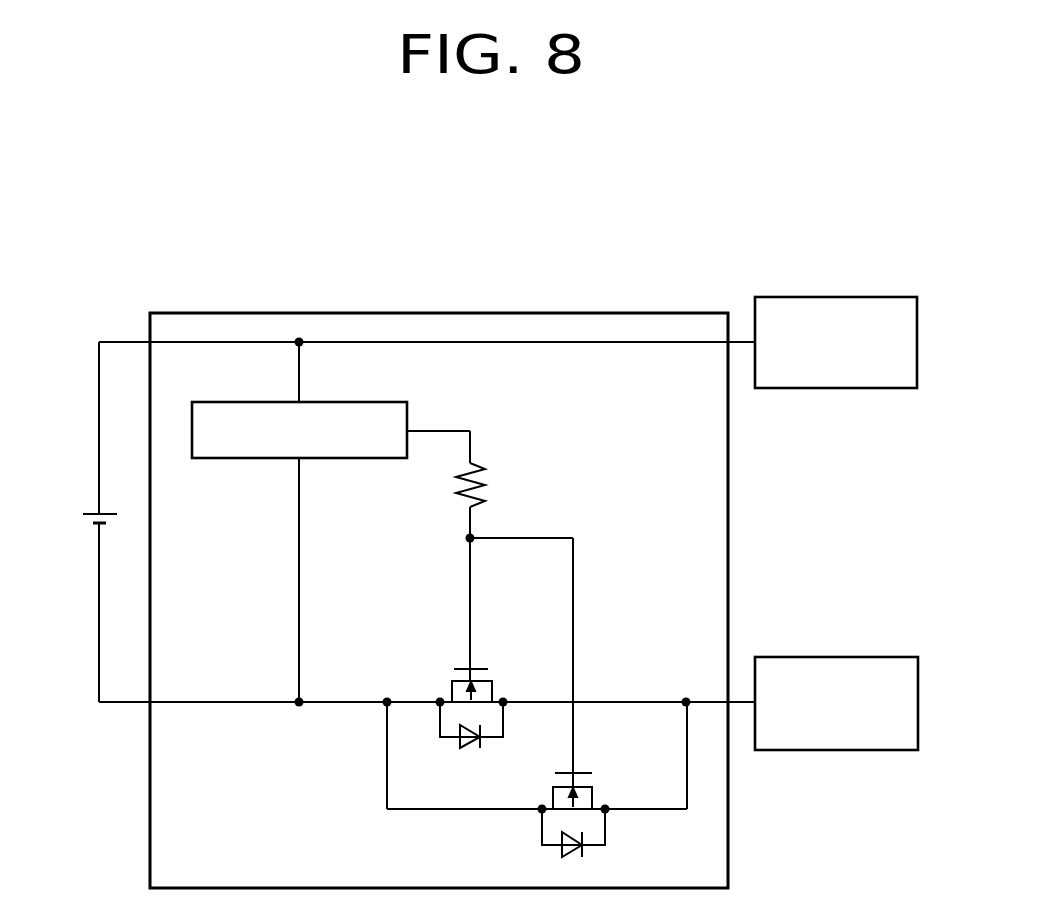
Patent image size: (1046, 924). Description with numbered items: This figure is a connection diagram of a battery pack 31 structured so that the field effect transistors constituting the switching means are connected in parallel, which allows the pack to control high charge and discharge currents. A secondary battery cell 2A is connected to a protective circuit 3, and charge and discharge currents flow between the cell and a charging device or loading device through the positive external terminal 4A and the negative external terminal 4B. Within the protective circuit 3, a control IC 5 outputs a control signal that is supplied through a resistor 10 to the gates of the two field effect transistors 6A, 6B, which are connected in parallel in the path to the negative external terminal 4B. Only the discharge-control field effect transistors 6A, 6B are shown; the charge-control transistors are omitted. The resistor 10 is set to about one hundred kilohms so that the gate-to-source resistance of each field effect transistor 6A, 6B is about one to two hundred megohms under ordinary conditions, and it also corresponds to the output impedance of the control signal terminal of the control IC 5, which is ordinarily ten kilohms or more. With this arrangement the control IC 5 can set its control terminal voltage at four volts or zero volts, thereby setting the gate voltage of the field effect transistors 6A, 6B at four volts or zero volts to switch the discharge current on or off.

The battery pack 31 is at (653, 287).
The protective circuit 3 is at (728, 518).
The battery cell 2A is at (92, 513).
The control IC 5 is at (390, 402).
The resistor 10 is at (484, 492).
The field effect transistor 6A is at (450, 698).
The field effect transistor 6B is at (595, 798).
The positive external terminal 4A is at (833, 297).
The negative external terminal 4B is at (833, 657).